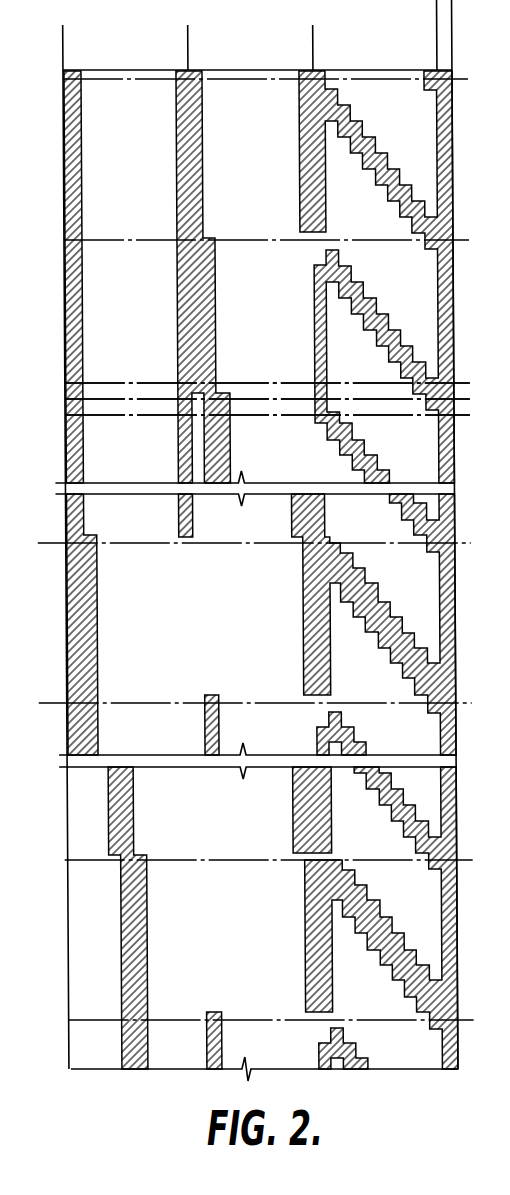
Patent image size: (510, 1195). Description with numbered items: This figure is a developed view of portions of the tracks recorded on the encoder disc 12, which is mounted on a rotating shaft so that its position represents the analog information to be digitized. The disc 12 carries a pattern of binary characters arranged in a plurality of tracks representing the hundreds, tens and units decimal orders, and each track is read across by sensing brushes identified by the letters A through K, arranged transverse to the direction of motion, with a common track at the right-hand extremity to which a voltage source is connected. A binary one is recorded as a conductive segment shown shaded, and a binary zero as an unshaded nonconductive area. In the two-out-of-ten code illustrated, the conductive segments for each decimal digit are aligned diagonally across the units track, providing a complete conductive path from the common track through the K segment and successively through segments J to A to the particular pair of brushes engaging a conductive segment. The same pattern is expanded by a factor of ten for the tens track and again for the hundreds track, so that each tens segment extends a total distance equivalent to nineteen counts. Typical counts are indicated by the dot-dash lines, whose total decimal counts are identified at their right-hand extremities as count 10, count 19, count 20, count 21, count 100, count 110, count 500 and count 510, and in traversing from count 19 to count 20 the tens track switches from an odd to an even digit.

The encoder disc 12 is at (401, 1069).
The row 10 contact level line 10 is at (279, 239).
The row 19 contact level line 19 is at (280, 383).
The row 20 contact level line 20 is at (280, 399).
The row 21 contact level line 21 is at (280, 415).
The row 100 contact level line 100 is at (273, 543).
The row 110 contact level line 110 is at (274, 703).
The row 500 contact level line 500 is at (287, 860).
The row 510 contact level line 510 is at (289, 1020).